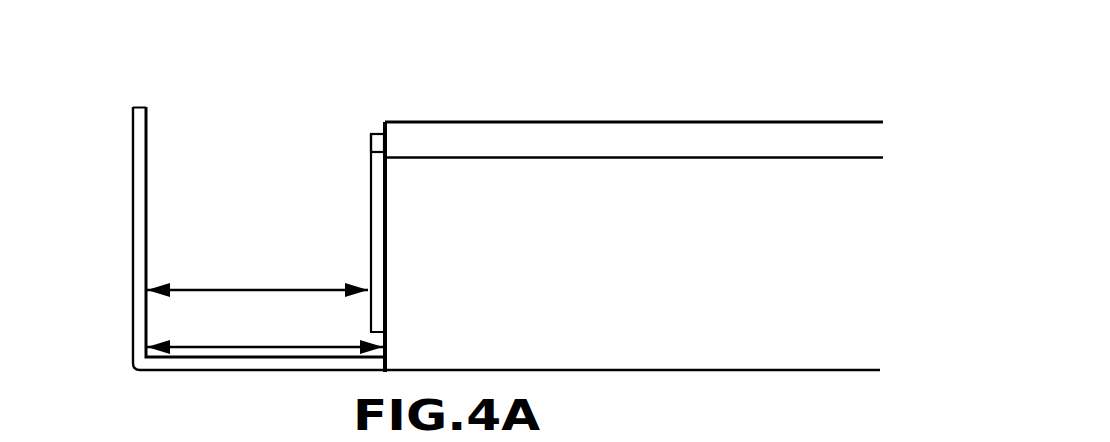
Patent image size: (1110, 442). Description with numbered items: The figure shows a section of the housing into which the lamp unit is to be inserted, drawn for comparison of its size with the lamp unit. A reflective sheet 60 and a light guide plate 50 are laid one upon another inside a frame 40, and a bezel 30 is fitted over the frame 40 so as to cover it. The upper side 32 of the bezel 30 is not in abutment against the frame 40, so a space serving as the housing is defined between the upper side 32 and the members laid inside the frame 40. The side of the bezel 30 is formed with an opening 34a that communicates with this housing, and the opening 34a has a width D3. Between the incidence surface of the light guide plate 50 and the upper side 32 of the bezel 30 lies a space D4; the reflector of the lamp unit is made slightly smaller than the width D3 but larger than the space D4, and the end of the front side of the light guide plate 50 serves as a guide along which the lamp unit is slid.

The bezel 30 is at (690, 352).
The upper side 32 is at (132, 147).
The opening 34a is at (193, 177).
The frame 40 is at (668, 128).
The light guide plate 50 is at (374, 195).
The reflective sheet 60 is at (377, 130).
The space D4 is at (257, 272).
The width of the opening D3 is at (265, 329).